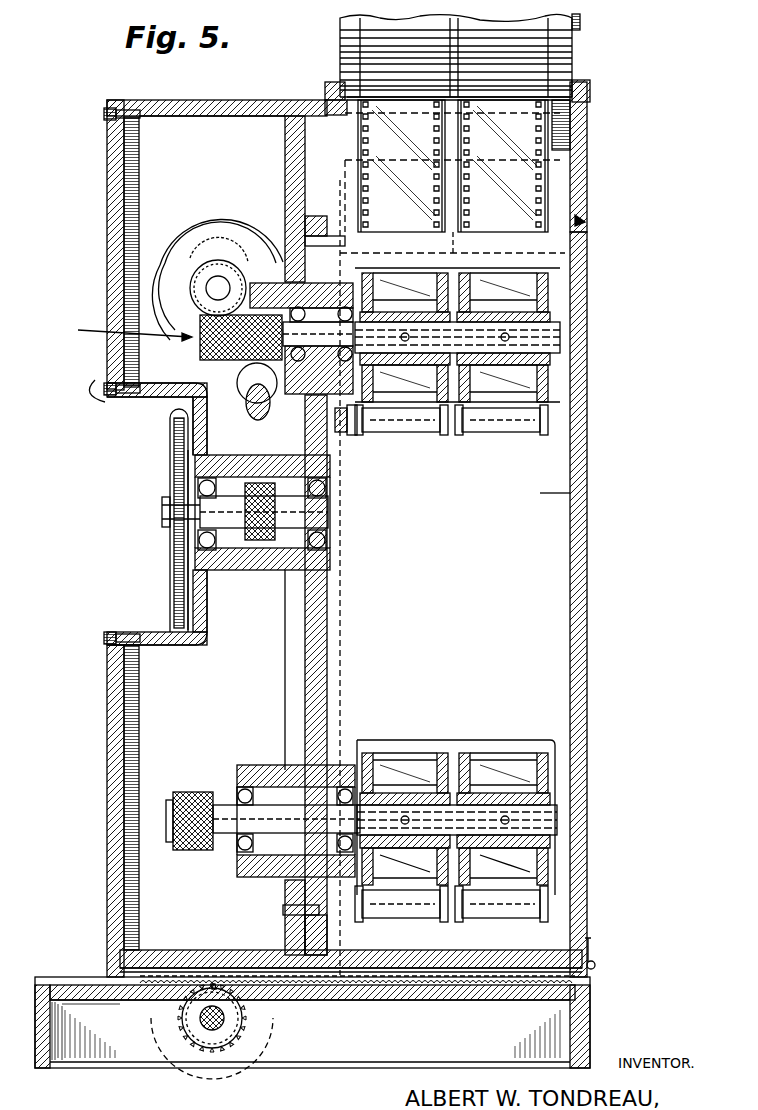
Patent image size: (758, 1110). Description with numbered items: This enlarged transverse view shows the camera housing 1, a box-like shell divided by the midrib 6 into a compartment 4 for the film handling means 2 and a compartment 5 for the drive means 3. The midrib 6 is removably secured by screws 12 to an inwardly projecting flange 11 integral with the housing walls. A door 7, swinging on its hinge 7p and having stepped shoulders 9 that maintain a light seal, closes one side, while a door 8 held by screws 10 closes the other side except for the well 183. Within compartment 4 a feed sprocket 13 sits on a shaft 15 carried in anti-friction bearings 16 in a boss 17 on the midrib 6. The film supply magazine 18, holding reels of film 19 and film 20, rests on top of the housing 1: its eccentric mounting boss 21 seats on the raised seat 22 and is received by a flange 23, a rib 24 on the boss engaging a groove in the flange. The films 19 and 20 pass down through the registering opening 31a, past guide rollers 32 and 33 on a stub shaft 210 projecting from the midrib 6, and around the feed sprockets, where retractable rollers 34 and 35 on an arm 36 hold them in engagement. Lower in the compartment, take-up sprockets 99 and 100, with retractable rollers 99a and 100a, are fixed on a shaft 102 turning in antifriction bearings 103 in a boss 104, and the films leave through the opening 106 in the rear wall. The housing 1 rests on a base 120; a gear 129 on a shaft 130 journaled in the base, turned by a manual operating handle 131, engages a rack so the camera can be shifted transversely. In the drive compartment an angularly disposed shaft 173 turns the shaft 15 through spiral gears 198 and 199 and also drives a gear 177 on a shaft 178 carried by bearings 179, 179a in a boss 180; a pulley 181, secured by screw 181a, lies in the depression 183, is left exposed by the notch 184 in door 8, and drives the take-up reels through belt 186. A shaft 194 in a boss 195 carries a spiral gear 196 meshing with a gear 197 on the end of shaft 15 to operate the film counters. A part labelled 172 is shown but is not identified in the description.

The housing 1 is at (597, 176).
The film handling means 2 is at (568, 297).
The drive means 3 is at (130, 327).
The compartment 4 is at (540, 493).
The compartment 5 is at (145, 153).
The midrib 6 is at (327, 640).
The door 7 is at (588, 589).
The hinge 7p is at (597, 966).
The door 8 is at (107, 271).
The stepped shoulders 9 is at (590, 222).
The screws 10 is at (104, 388).
The flange 11 is at (285, 161).
The screws 12 is at (327, 920).
The feed sprocket 13 is at (545, 384).
The shaft 15 is at (545, 335).
The anti-friction bearings 16 is at (330, 341).
The boss 17 is at (374, 297).
The film supply magazine 18 is at (340, 30).
The film 19 is at (482, 927).
The film 20 is at (388, 927).
The mounting boss 21 is at (560, 73).
The raised seat 22 is at (590, 88).
The flange 23 is at (325, 88).
The rib 24 is at (350, 108).
The registering opening 31a is at (572, 110).
The guide roller 32 is at (506, 230).
The guide roller 33 is at (406, 230).
The retractable roller 34 is at (505, 430).
The retractable roller 35 is at (418, 430).
The arm 36 is at (349, 432).
The take-up sprocket 99 is at (538, 755).
The retractable roller 99a is at (515, 915).
The take-up sprocket 100 is at (440, 755).
The retractable roller 100a is at (428, 910).
The shaft 102 is at (540, 816).
The antifriction bearings 103 is at (240, 848).
The boss 104 is at (252, 765).
The opening 106 is at (462, 745).
The base 120 is at (225, 950).
The gear 129 is at (232, 1025).
The shaft 130 is at (200, 1022).
The manual operating handle 131 is at (211, 1079).
The coupling block 172 is at (188, 792).
The shaft 173 is at (258, 418).
The gear 177 is at (270, 545).
The shaft 178 is at (330, 508).
The bearing 179 is at (322, 540).
The bearing 179a is at (200, 486).
The boss 180 is at (240, 570).
The pulley 181 is at (170, 447).
The screw 181a is at (162, 522).
The depression 183 is at (155, 397).
The notch 184 is at (82, 395).
The belt 186 is at (178, 562).
The shaft 194 is at (205, 248).
The boss 195 is at (217, 240).
The spiral gear 196 is at (213, 287).
The gear 197 is at (200, 340).
The spiral gear 198 is at (245, 380).
The spiral gear 199 is at (250, 355).
The stub shaft 210 is at (305, 226).